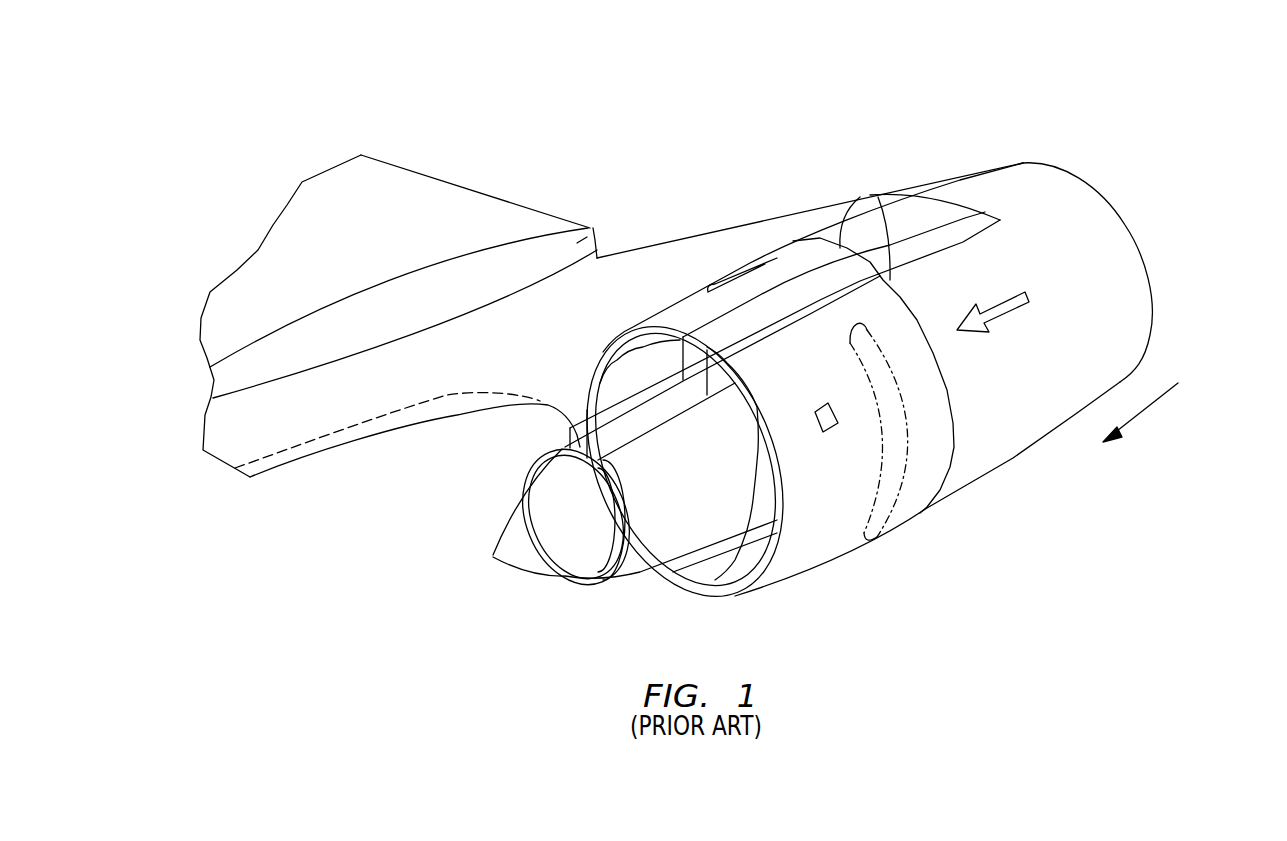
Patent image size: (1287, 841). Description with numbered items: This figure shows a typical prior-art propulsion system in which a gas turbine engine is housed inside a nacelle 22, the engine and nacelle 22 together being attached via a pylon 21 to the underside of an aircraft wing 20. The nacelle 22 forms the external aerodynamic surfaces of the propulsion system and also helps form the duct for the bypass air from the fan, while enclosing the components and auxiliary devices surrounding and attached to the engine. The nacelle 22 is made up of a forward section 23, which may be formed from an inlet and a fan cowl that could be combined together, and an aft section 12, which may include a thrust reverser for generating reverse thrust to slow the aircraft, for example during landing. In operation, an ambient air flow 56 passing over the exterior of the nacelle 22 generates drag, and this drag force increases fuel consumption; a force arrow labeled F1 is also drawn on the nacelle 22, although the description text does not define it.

The inlet / fan cowl ring 12 is at (793, 558).
The pylon 20 is at (595, 228).
The wing 21 is at (226, 443).
The nacelle assembly 22 is at (1020, 127).
The fan cowl 23 is at (1037, 428).
The airflow direction arrow 56 is at (1160, 398).
The force arrow F1 is at (1012, 288).